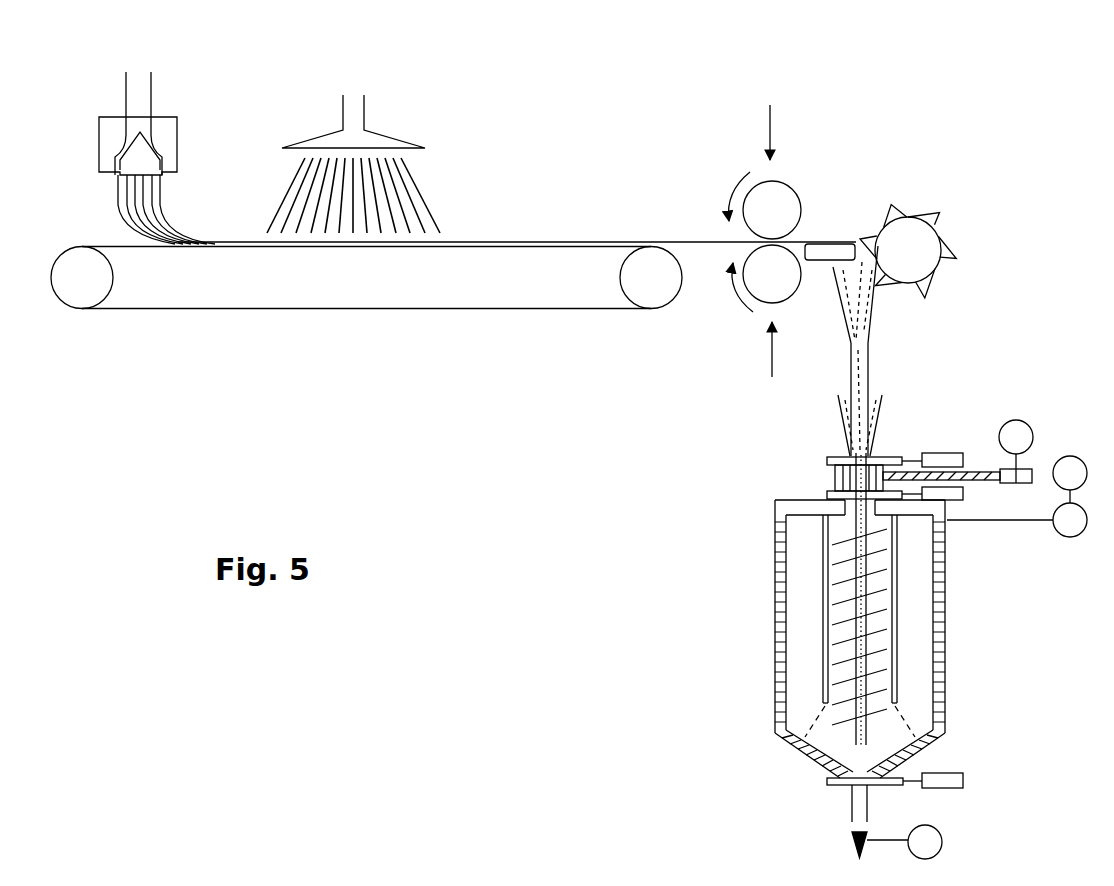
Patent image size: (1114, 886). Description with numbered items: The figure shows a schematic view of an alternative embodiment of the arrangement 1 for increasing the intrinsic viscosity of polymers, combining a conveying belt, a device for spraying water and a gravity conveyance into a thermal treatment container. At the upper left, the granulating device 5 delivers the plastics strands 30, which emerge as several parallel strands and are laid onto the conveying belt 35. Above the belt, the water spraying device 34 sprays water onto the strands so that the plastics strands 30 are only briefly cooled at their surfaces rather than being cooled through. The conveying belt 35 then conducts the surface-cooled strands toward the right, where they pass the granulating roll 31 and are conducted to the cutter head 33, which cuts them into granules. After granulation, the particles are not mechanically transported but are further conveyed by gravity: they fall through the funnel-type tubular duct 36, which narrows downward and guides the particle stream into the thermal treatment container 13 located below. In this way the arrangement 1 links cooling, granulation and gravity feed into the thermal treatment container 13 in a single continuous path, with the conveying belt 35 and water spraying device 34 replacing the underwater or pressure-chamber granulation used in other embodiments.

The arrangement 1 is at (556, 328).
The granulating device 5 is at (167, 130).
The thermal treatment container 13 is at (970, 666).
The plastics strands 30 is at (168, 210).
The granulating roll 31 is at (778, 202).
The cutter head 33 is at (915, 243).
The water spraying device 34 is at (353, 107).
The conveying belt 35 is at (288, 282).
The funnel-type tubular duct 36 is at (866, 368).